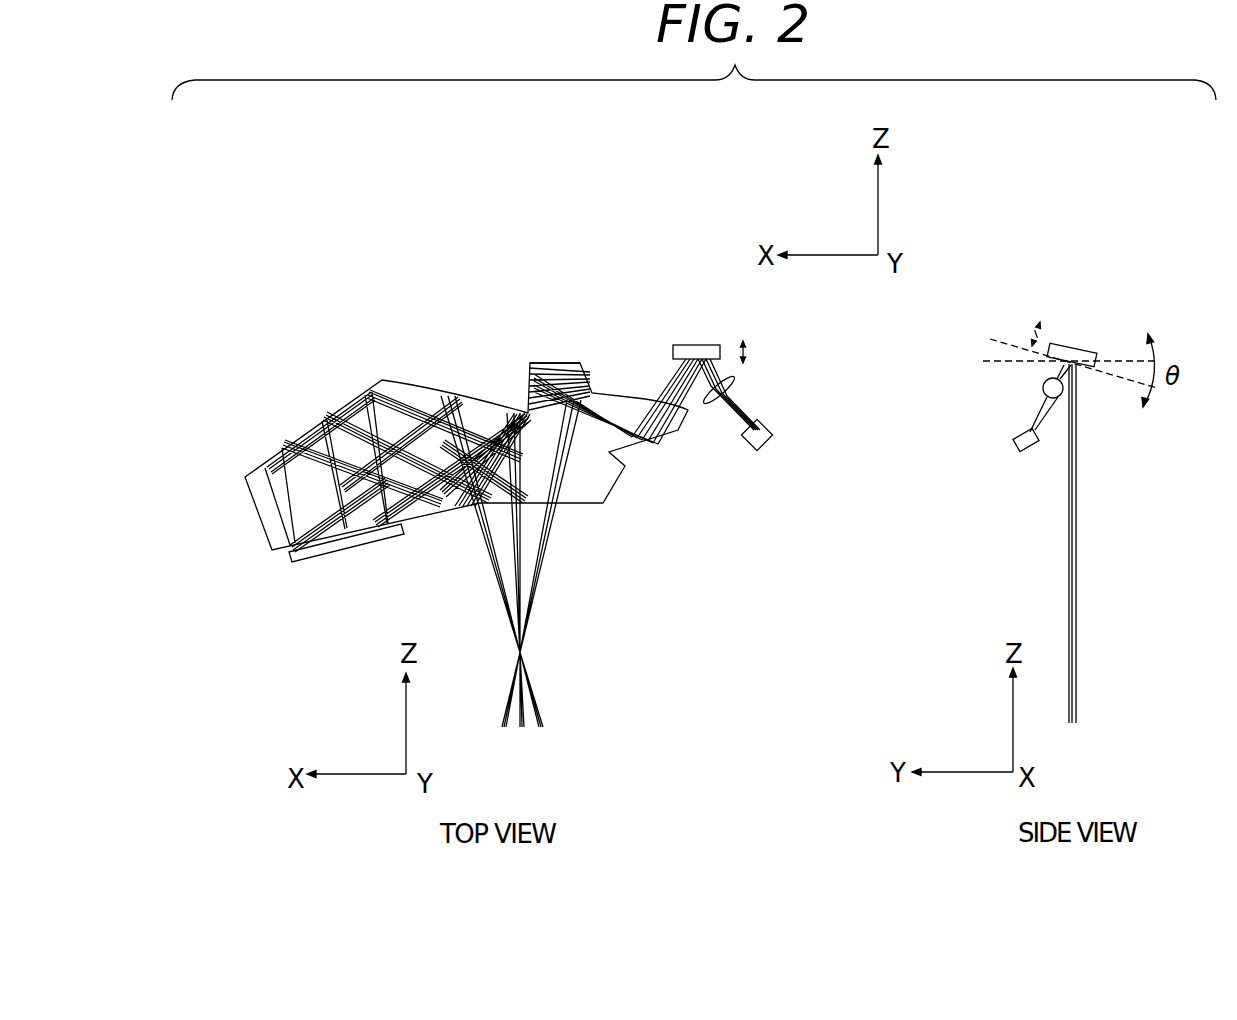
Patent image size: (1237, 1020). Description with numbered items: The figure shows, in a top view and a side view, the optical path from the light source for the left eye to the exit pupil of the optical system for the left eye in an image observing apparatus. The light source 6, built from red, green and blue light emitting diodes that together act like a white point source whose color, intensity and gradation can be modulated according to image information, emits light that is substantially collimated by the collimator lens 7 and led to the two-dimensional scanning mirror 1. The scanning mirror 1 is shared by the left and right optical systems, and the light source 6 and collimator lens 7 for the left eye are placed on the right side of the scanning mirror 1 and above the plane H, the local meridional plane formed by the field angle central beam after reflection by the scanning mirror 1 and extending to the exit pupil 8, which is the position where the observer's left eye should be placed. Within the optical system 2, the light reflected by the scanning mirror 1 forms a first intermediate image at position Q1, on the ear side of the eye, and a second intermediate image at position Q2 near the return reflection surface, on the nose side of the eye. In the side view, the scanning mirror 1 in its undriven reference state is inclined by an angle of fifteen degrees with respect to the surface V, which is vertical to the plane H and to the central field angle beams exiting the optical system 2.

The two-dimensional scanning mirror 1 is at (692, 343).
The optical system for a left eye 2 is at (223, 418).
The light source 6 is at (770, 447).
The collimator lens 7 is at (748, 395).
The exit pupil 8 is at (536, 654).
The first intermediate imaging plane position Q1 is at (618, 396).
The second intermediate imaging plane position Q2 is at (291, 557).
The plane H is at (1078, 521).
The surface V is at (997, 360).